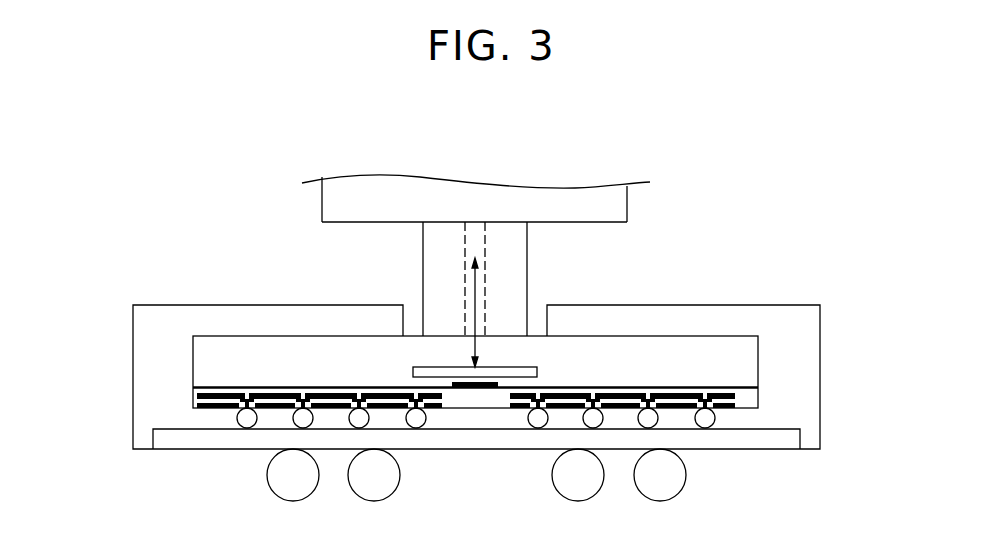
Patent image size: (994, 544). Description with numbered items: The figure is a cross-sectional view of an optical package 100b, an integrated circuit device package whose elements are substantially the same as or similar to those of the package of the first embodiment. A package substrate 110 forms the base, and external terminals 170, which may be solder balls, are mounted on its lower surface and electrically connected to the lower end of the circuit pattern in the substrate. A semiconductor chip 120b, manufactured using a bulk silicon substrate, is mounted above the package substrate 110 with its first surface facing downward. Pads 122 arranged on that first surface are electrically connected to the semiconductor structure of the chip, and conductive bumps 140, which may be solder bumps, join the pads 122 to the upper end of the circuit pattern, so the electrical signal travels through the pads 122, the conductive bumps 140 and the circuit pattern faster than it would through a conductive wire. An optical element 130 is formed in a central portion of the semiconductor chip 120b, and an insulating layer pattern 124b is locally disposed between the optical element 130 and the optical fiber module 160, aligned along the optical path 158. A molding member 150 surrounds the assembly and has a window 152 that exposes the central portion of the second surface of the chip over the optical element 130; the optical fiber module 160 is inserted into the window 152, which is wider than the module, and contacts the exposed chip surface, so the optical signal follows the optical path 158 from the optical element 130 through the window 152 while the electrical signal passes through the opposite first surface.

The optical package 100b is at (497, 147).
The package substrate 110 is at (800, 437).
The semiconductor chip 120b is at (750, 348).
The pads 122 is at (203, 394).
The insulating layer pattern 124b is at (538, 372).
The optical element 130 is at (474, 388).
The conductive bumps 140 is at (716, 421).
The molding member 150 is at (806, 320).
The window 152 is at (536, 311).
The optical path 158 is at (475, 283).
The optical fiber module 160 is at (423, 250).
The external terminals 170 is at (670, 481).